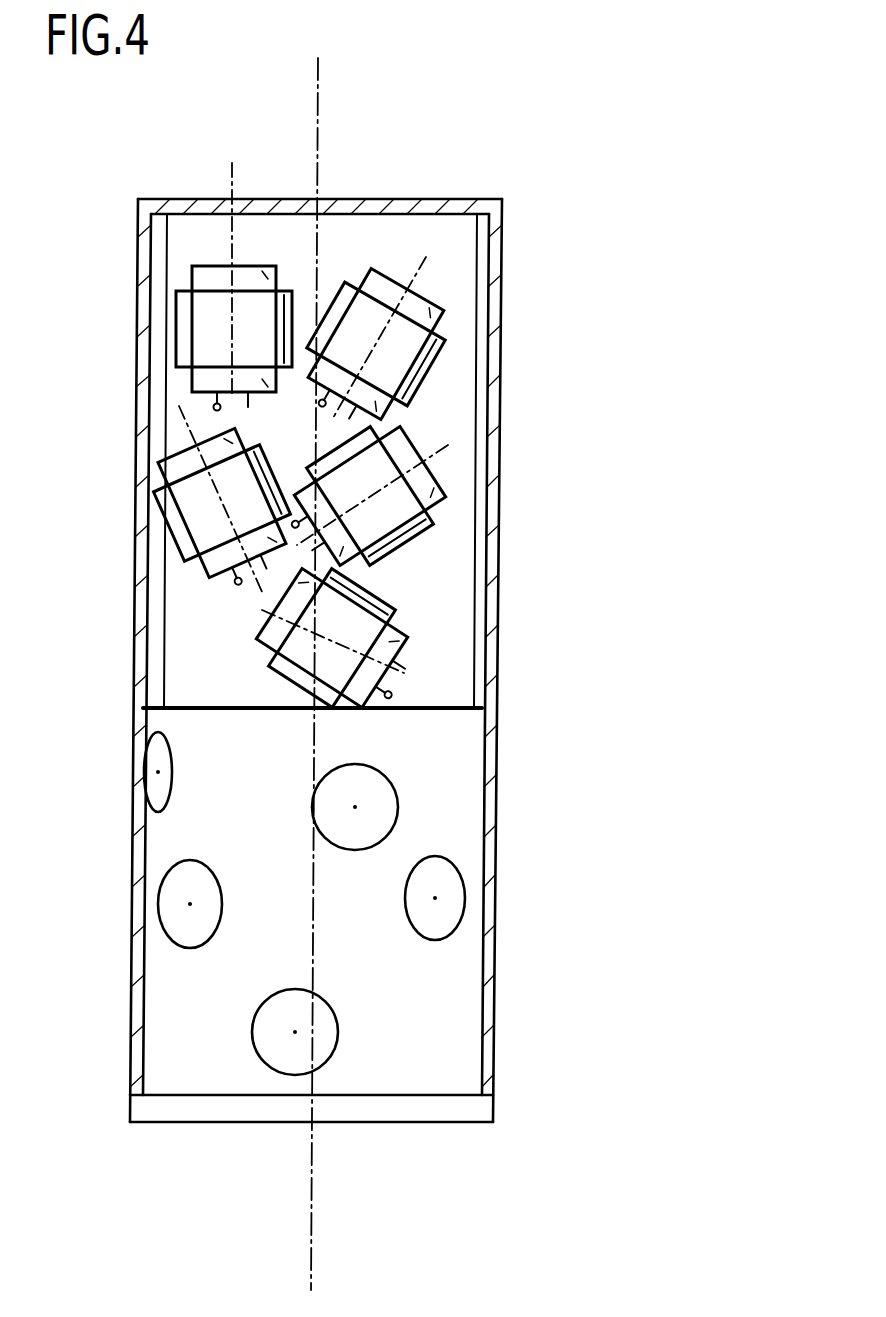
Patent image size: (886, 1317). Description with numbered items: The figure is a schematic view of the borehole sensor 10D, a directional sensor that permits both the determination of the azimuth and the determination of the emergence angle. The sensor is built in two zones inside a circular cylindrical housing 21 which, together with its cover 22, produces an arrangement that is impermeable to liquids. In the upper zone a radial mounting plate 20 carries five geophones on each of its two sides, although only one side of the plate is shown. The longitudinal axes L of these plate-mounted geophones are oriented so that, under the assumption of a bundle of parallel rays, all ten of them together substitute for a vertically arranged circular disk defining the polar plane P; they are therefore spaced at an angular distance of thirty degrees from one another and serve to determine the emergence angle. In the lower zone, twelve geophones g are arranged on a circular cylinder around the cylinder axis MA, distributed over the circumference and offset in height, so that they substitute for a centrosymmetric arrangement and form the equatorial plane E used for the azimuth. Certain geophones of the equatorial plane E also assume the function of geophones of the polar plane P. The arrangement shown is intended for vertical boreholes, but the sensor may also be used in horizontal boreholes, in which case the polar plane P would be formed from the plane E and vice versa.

The borehole sensor 10D is at (548, 210).
The radial mounting plate 20 is at (448, 371).
The circular cylindrical housing 21 is at (493, 565).
The cover 22 is at (361, 199).
The polar plane P is at (450, 281).
The cylinder axis MA is at (318, 108).
The equatorial plane E is at (386, 1124).
The longitudinal axis L is at (232, 198).
The geophone g is at (162, 780).